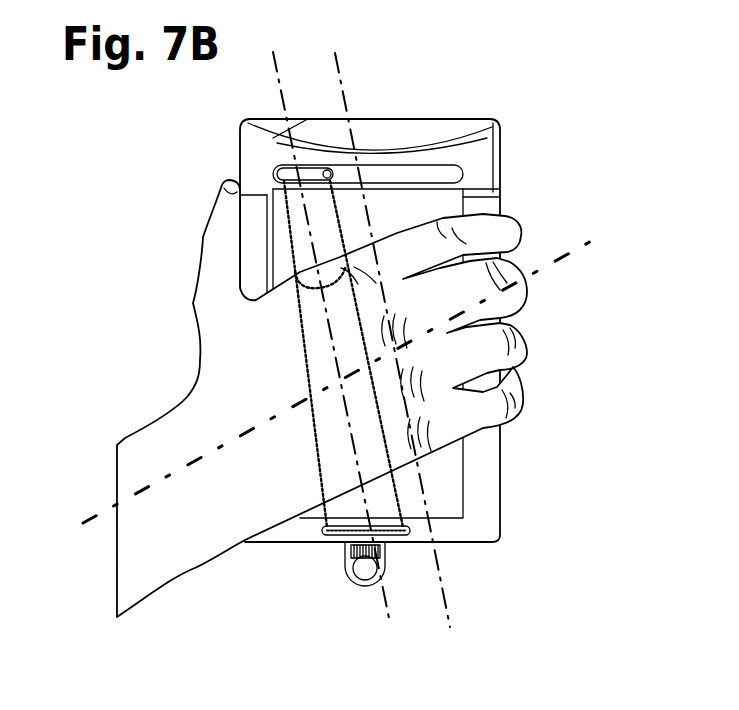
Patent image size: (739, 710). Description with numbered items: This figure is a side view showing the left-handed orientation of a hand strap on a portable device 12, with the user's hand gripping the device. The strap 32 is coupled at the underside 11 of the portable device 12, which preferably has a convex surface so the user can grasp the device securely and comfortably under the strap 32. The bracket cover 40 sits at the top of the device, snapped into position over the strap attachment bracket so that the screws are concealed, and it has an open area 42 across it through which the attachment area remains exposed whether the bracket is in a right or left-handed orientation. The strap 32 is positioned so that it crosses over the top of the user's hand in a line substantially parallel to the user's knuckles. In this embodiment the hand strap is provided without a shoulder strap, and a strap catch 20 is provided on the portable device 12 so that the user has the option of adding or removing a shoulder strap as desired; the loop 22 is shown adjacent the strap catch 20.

The underside 11 is at (406, 212).
The portable device 12 is at (533, 470).
The strap catch 20 is at (346, 551).
The ring 22 is at (368, 570).
The strap 32 is at (313, 320).
The bracket cover 40 is at (513, 127).
The open area 42 is at (383, 170).